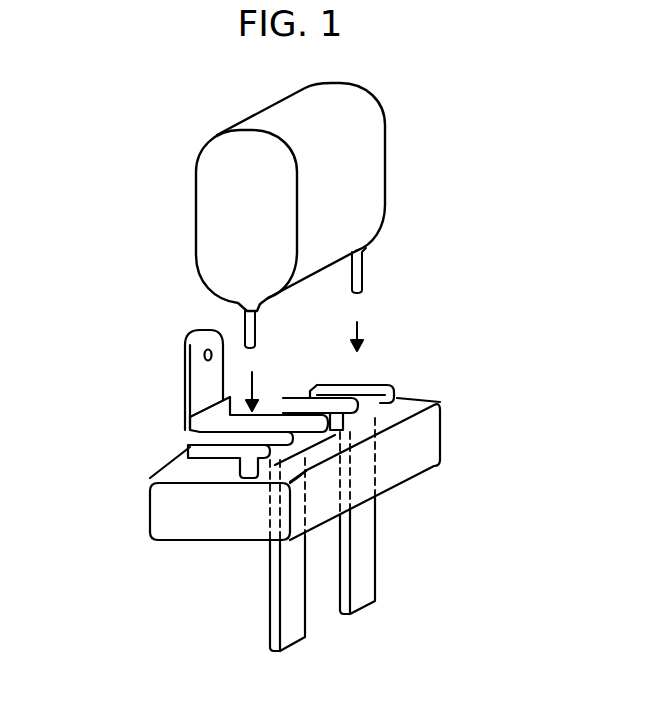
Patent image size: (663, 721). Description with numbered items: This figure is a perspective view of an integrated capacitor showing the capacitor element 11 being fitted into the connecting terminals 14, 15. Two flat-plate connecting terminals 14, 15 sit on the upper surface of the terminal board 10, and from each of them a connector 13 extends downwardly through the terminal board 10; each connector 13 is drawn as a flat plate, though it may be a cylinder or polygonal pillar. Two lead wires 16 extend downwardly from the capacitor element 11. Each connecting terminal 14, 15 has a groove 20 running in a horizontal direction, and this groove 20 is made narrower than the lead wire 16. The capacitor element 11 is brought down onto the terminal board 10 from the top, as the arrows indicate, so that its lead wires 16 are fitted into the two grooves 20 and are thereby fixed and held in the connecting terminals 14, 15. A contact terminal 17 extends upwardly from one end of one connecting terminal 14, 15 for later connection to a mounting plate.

The terminal board 10 is at (172, 512).
The capacitor element 11 is at (245, 212).
The connector 13 is at (293, 617).
The connecting terminal 14 is at (390, 385).
The connecting terminal 15 is at (275, 445).
The lead wire 16 is at (253, 325).
The contact terminal 17 is at (182, 368).
The groove 20 is at (273, 447).